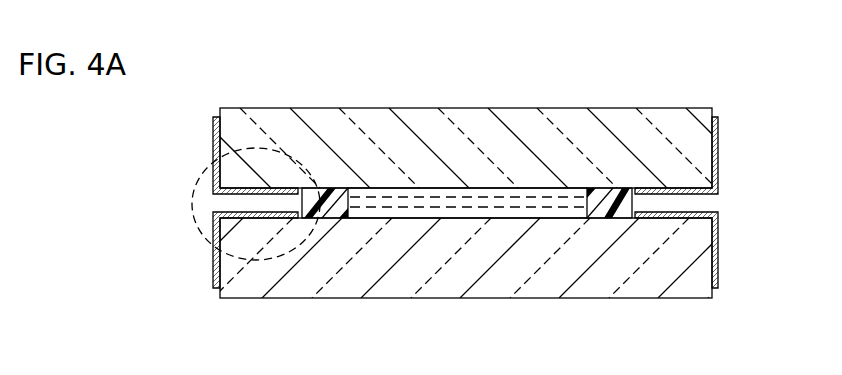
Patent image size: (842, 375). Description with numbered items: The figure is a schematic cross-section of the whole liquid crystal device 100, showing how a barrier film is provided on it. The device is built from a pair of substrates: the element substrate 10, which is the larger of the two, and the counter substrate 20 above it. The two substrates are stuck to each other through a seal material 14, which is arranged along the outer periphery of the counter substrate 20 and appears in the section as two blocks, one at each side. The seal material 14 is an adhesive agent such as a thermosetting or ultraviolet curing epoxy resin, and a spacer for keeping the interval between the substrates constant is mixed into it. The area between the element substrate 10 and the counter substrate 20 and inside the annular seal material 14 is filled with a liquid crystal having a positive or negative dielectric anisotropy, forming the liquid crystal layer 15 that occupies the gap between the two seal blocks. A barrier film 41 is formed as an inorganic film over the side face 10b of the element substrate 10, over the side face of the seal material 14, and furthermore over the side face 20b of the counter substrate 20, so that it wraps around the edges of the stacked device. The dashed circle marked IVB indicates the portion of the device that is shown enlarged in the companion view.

The liquid crystal device 100 is at (659, 68).
The element substrate 10 is at (504, 299).
The side face of the element substrate 10b is at (722, 250).
The counter substrate 20 is at (509, 122).
The side face of the counter substrate 20b is at (722, 152).
The barrier film 41 is at (719, 180).
The seal material 14 is at (333, 192).
The liquid crystal layer 15 is at (431, 192).
The detail region IVB is at (241, 146).